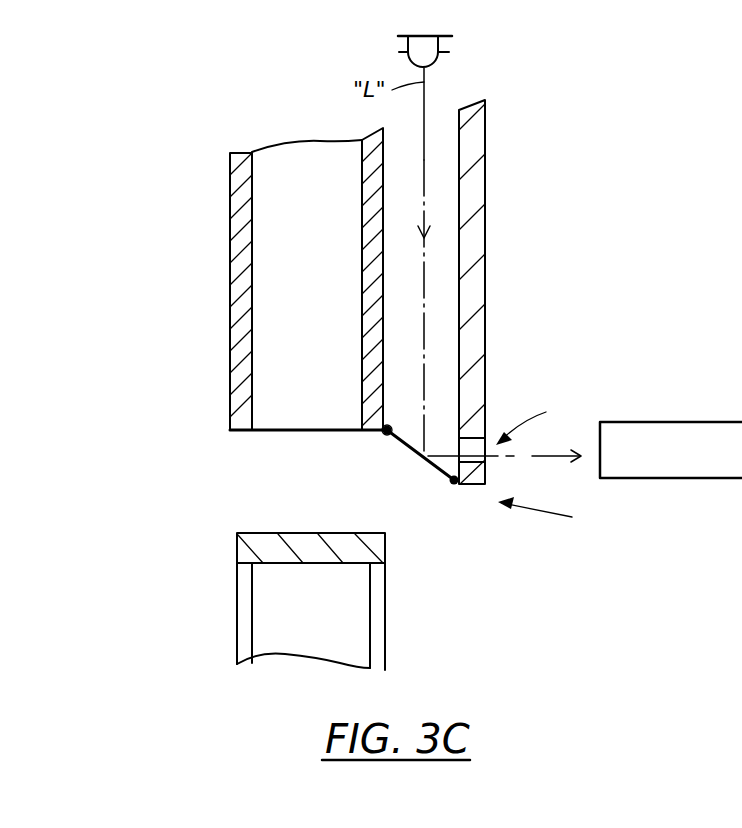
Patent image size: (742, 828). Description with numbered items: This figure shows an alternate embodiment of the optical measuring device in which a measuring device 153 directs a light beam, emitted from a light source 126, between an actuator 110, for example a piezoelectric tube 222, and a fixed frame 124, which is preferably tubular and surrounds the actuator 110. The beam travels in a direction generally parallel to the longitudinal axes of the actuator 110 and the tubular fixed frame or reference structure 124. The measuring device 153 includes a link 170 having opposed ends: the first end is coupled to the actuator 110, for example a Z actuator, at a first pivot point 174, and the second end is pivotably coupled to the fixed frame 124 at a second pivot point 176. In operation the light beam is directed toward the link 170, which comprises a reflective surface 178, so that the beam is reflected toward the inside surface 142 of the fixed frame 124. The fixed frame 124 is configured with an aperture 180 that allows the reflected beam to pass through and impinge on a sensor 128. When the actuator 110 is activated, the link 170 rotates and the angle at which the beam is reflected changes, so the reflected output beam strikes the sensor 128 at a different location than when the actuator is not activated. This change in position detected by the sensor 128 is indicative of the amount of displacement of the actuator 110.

The actuator 110 is at (280, 118).
The piezoelectric tube 222 is at (236, 170).
The fixed frame 124 is at (480, 143).
The inside surface of fixed frame 142 is at (450, 292).
The light source 126 is at (438, 58).
The sensor 128 is at (733, 375).
The first pivot point 174 is at (380, 437).
The reflective surface 178 is at (390, 439).
The link 170 is at (392, 442).
The second pivot point 176 is at (452, 484).
The aperture 180 is at (537, 421).
The measuring device 153 is at (556, 518).